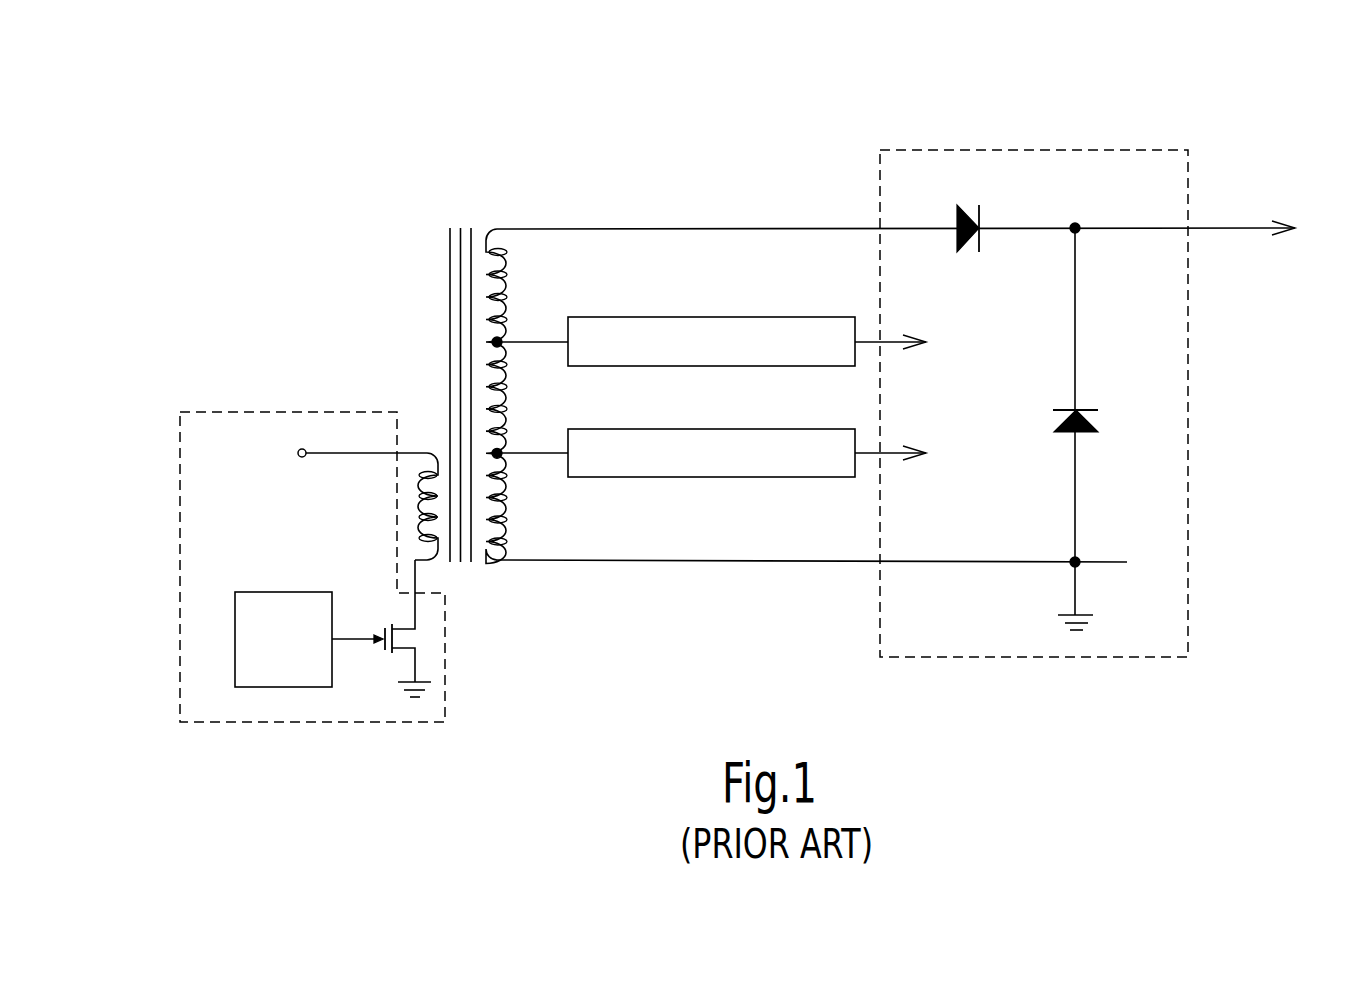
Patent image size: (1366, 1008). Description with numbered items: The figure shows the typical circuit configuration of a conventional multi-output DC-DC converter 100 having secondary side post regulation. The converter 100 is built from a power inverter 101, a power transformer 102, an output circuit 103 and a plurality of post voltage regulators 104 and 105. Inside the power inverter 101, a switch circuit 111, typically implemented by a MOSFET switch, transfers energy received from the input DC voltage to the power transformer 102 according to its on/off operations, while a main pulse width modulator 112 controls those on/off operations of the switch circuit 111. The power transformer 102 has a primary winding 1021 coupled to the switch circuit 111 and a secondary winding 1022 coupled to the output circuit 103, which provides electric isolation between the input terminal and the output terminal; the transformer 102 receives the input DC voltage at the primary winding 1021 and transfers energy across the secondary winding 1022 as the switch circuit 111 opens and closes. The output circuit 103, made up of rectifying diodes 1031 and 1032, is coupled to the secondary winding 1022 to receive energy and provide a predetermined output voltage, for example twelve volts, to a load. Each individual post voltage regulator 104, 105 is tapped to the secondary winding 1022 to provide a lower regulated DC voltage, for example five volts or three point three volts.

The multi-output DC-DC converter 100 is at (307, 130).
The power inverter 101 is at (238, 422).
The power transformer 102 is at (455, 225).
The primary winding 1021 is at (427, 452).
The secondary winding 1022 is at (503, 272).
The output circuit 103 is at (1073, 183).
The rectifying diode 1031 is at (970, 207).
The rectifying diode 1032 is at (1109, 422).
The post voltage regulator 104 is at (747, 323).
The post voltage regulator 105 is at (748, 475).
The switch circuit 111 is at (383, 632).
The main pulse width modulator 112 is at (278, 595).